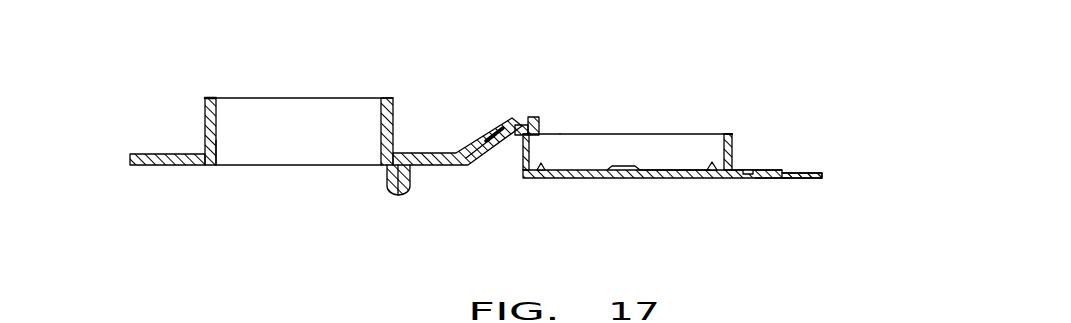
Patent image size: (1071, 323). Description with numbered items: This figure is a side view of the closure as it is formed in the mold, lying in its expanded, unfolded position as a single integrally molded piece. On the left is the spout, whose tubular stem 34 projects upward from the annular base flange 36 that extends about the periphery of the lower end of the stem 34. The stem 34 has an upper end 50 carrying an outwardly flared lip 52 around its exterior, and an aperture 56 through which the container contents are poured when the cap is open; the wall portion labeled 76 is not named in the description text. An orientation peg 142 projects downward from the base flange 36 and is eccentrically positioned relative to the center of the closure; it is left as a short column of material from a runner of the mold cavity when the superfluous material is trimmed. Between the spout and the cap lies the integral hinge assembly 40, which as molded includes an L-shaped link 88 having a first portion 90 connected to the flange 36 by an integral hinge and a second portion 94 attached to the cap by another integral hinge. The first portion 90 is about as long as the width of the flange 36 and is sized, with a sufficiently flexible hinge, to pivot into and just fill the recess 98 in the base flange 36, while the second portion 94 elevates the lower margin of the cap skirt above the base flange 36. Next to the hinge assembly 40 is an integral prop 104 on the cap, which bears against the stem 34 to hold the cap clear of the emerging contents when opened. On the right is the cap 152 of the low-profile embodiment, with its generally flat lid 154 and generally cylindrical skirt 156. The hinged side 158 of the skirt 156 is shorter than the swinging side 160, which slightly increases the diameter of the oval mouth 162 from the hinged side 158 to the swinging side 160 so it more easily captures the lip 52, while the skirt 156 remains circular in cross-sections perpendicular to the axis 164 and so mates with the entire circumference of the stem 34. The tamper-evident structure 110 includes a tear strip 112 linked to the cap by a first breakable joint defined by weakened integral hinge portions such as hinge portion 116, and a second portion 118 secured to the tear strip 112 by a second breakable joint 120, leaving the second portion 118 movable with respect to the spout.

The stem 34 is at (246, 134).
The base flange 36 is at (158, 144).
The integral hinge assembly 40 is at (488, 118).
The upper end 50 is at (205, 102).
The lip 52 is at (210, 98).
The aperture 56 is at (218, 145).
The right side wall 76 is at (395, 128).
The L-shaped link 88 is at (512, 118).
The first portion 90 is at (481, 146).
The second portion 94 is at (528, 117).
The recess 98 is at (442, 153).
The prop 104 is at (539, 133).
The tamper-evident structure 110 is at (691, 177).
The tear strip 112 is at (763, 180).
The weakened integral hinge portion 116 is at (745, 180).
The second portion 118 is at (807, 173).
The second breakable joint 120 is at (780, 180).
The orientation peg 142 is at (387, 178).
The cap 152 is at (570, 180).
The lid 154 is at (675, 180).
The skirt 156 is at (732, 167).
The hinged side 158 is at (522, 155).
The swinging side 160 is at (732, 157).
The mouth 162 is at (727, 140).
The axis 164 is at (625, 153).